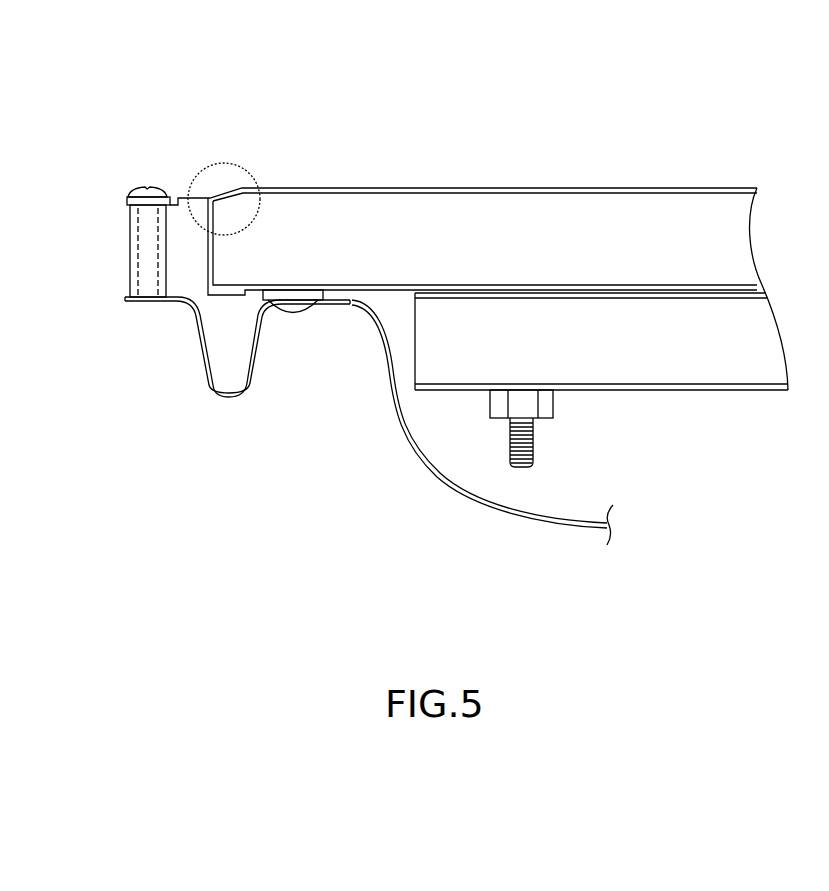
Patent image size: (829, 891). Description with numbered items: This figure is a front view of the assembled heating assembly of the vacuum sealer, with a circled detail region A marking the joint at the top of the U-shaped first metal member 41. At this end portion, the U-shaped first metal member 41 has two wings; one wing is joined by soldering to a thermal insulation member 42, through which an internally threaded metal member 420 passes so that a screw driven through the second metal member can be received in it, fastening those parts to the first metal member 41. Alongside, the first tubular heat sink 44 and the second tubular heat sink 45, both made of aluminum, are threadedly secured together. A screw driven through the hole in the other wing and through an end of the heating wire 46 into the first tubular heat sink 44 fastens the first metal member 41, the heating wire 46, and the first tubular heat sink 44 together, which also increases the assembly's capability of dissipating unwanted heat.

The detail region A is at (213, 163).
The U-shaped first metal member 41 is at (215, 393).
The thermal insulation member 42 is at (101, 250).
The internally threaded metal member 420 is at (148, 258).
The first tubular heat sink 44 is at (495, 212).
The second tubular heat sink 45 is at (675, 365).
The heating wire 46 is at (438, 477).